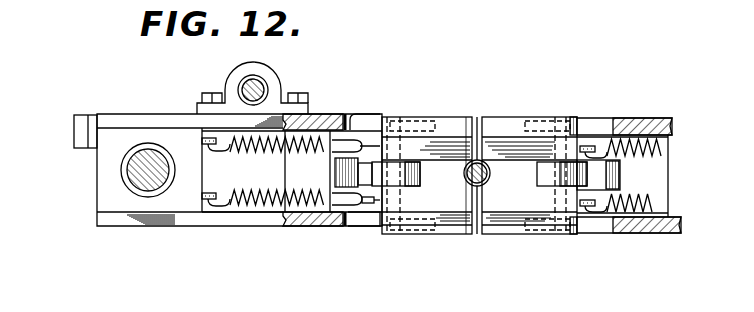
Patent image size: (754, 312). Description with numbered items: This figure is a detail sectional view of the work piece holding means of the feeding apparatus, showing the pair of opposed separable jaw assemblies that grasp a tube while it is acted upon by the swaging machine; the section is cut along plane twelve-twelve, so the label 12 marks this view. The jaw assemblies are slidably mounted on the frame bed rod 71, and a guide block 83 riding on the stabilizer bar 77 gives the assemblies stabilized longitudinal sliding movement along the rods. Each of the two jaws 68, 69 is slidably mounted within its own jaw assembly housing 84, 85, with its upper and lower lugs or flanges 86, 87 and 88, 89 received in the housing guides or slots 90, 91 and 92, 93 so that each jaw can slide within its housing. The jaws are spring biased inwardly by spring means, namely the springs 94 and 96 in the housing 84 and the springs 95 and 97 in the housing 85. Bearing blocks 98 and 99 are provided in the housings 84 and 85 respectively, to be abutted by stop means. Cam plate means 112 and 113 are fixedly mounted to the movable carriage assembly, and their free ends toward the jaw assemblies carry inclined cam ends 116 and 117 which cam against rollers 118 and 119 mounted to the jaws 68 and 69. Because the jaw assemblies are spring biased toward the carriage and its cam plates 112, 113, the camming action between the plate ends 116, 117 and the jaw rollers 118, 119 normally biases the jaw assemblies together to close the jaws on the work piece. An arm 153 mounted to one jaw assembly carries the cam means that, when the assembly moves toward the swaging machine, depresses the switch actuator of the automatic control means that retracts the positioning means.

The shock absorber assembly 12 is at (425, 170).
The arm 153 is at (80, 126).
The bed rod 71 is at (140, 172).
The guide block 83 is at (234, 80).
The stabilizer bar 77 is at (259, 87).
The bearing block 99 is at (295, 160).
The housing guide or slot 91 is at (357, 122).
The jaw assembly housing 85 is at (320, 224).
The housing guide or slot 93 is at (350, 225).
The spring 95 is at (238, 153).
The spring 97 is at (282, 192).
The cam plate 113 is at (337, 177).
The cam end 117 is at (345, 172).
The roller 119 is at (398, 175).
The lug or flange 89 is at (441, 234).
The jaw 69 is at (440, 150).
The lug or flange 87 is at (467, 118).
The lug or flange 86 is at (500, 118).
The jaw 68 is at (538, 148).
The lug or flange 88 is at (497, 234).
The roller 118 is at (548, 173).
The housing guide or slot 90 is at (613, 124).
The housing guide or slot 92 is at (591, 230).
The jaw assembly housing 84 is at (665, 232).
The bearing block 98 is at (650, 178).
The spring 94 is at (660, 148).
The spring 96 is at (655, 205).
The cam plate 112 is at (617, 172).
The cam end 116 is at (606, 183).